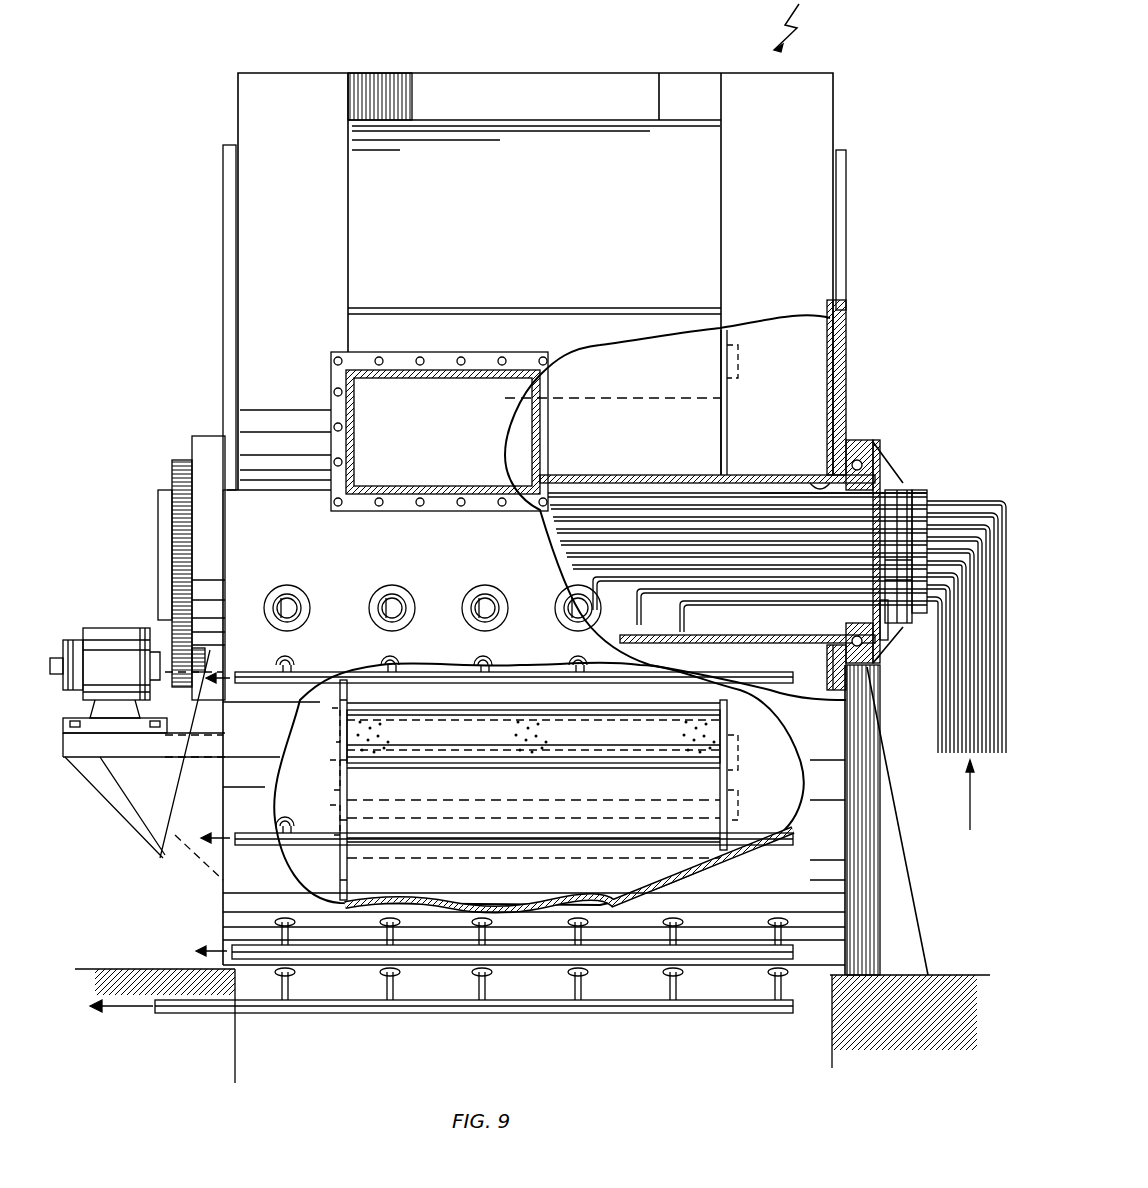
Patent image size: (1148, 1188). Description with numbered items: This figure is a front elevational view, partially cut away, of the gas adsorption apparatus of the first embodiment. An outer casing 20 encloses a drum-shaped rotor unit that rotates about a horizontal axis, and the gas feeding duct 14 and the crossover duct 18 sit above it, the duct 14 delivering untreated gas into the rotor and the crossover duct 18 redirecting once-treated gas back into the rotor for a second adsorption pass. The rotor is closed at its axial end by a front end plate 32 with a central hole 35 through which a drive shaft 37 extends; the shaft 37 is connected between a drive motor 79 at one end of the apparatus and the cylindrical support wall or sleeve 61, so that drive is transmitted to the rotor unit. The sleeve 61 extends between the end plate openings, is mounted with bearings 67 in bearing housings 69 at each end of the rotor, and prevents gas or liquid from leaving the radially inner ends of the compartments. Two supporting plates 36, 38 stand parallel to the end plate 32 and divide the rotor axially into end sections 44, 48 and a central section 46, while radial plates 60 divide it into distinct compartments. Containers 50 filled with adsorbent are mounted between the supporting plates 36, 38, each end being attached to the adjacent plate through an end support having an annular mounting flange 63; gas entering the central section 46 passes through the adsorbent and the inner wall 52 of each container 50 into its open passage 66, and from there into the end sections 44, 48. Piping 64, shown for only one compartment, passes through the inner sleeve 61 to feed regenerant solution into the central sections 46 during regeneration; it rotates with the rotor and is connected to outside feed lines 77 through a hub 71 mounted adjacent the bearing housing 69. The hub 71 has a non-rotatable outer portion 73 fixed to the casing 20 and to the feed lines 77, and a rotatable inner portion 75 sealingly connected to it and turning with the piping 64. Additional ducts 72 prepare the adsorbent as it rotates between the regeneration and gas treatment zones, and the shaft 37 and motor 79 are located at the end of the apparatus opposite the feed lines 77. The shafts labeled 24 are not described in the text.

The gas feeding duct 14 is at (695, 190).
The crossover duct 18 is at (243, 103).
The outer casing 20 is at (222, 320).
The shaft 24 is at (258, 672).
The front end plate 32 is at (845, 320).
The central hole 35 is at (820, 488).
The supporting plate 36 is at (730, 790).
The drive shaft 37 is at (180, 465).
The supporting plate 38 is at (348, 792).
The end section 44 is at (773, 614).
The central section 46 is at (536, 608).
The end section 48 is at (299, 781).
The container 50 is at (650, 402).
The inner wall 52 is at (450, 722).
The radial plate 60 is at (625, 345).
The cylindrical sleeve 61 is at (735, 482).
The annular mounting flange 63 is at (736, 385).
The piping 64 is at (700, 605).
The open passage 66 is at (590, 738).
The bearing 67 is at (860, 448).
The bearing housing 69 is at (880, 445).
The hub 71 is at (900, 490).
The additional duct 72 is at (380, 598).
The non-rotatable outer portion 73 is at (920, 497).
The rotatable inner portion 75 is at (895, 625).
The outside feed lines 77 is at (1000, 732).
The drive motor 79 is at (120, 635).